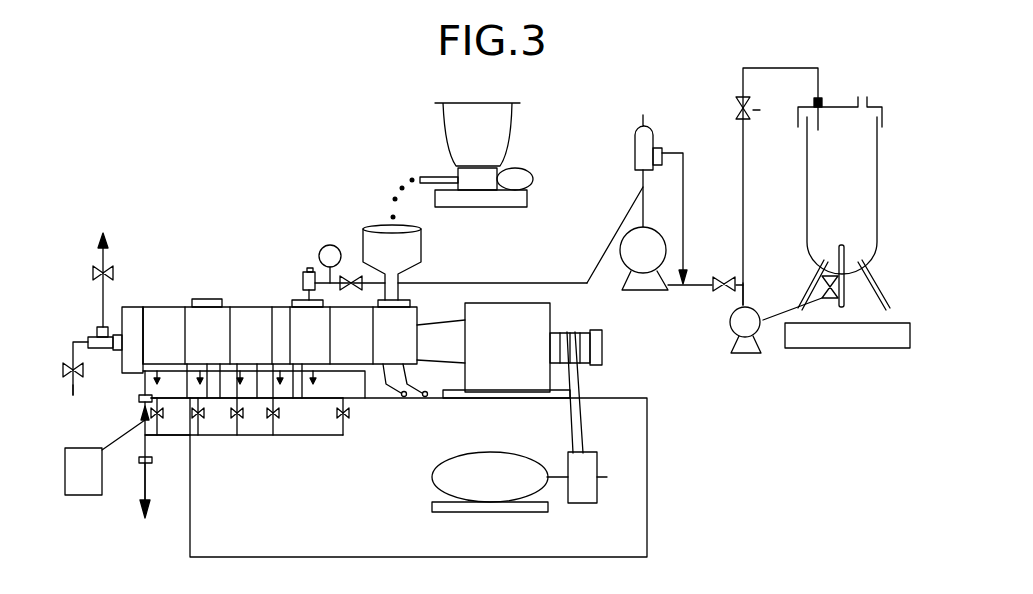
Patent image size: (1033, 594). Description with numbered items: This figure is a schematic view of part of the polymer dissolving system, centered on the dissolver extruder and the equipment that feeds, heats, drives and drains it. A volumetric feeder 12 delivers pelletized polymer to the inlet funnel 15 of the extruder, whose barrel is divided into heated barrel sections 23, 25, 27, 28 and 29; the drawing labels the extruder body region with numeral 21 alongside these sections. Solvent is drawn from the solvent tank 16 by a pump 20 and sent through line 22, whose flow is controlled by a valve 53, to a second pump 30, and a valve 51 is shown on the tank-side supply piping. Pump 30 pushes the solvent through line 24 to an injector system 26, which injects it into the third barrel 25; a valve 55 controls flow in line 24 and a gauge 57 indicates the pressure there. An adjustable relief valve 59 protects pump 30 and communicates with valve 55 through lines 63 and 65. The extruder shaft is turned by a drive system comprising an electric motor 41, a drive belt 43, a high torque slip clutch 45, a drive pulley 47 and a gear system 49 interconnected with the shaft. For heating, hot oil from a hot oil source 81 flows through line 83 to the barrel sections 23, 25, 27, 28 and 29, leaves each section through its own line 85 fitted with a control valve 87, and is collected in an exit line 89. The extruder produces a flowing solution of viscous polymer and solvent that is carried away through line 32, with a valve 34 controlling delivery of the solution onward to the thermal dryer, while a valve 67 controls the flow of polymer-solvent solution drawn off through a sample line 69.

The volumetric feeder 12 is at (452, 122).
The inlet funnel 15 is at (422, 243).
The solvent tank 16 is at (878, 173).
The pump 20 is at (747, 357).
The extruder 21 is at (400, 317).
The line 22 is at (745, 297).
The barrel section 23 is at (345, 315).
The line 24 is at (600, 250).
The third zone or barrel 25 is at (290, 308).
The injector system 26 is at (297, 300).
The barrel section 27 is at (238, 316).
The barrel section 28 is at (210, 300).
The barrel section 29 is at (148, 317).
The pump 30 is at (660, 225).
The line 32 is at (103, 296).
The valve 34 is at (100, 283).
The electric motor 41 is at (517, 488).
The drive belt 43 is at (580, 412).
The high torque slip clutch 45 is at (603, 363).
The drive pulley 47 is at (568, 340).
The gear system 49 is at (533, 317).
The valve 51 is at (733, 108).
The valve 53 is at (732, 278).
The valve 55 is at (350, 277).
The gauge 57 is at (330, 245).
The adjustable relief valve 59 is at (636, 133).
The line 63 is at (642, 183).
The line 65 is at (683, 190).
The valve 67 is at (67, 367).
The sample line 69 is at (78, 385).
The hot oil source 81 is at (92, 488).
The line 83 is at (133, 432).
The lines 85 is at (243, 387).
The control valve 87 is at (235, 417).
The exit line 89 is at (137, 487).